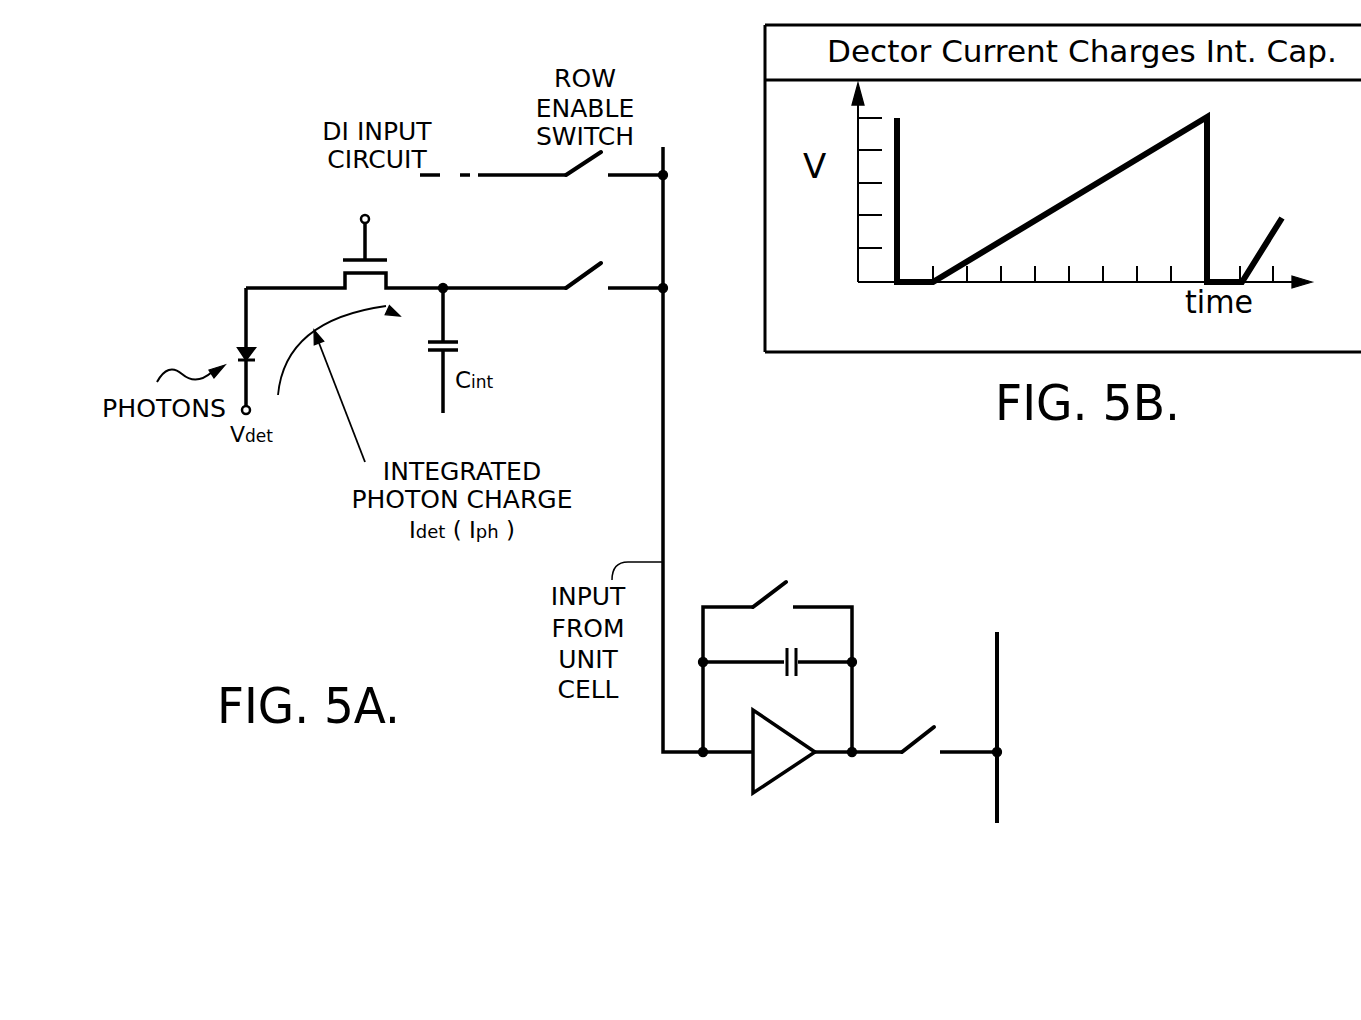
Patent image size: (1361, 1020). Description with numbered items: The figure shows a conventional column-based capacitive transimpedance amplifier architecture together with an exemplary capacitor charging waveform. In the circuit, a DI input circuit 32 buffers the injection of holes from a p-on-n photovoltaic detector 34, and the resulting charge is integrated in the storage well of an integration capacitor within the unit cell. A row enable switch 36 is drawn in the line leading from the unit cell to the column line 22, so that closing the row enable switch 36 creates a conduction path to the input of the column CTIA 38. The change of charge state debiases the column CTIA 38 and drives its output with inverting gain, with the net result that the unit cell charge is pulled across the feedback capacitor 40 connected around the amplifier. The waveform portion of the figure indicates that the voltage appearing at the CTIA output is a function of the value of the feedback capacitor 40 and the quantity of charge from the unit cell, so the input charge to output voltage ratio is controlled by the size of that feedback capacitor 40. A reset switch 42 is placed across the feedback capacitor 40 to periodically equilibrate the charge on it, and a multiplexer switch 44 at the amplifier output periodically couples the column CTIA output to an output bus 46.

The column bus line (input from unit cell) 22 is at (702, 449).
The DI input circuit 32 is at (343, 263).
The p-on-n photovoltaic detector 34 is at (238, 350).
The row enable switch 36 is at (588, 163).
The column CTIA 38 is at (788, 773).
The feedback capacitor 40 is at (790, 680).
The reset switch 42 is at (772, 604).
The multiplexer switch 44 is at (916, 742).
The output bus 46 is at (999, 690).